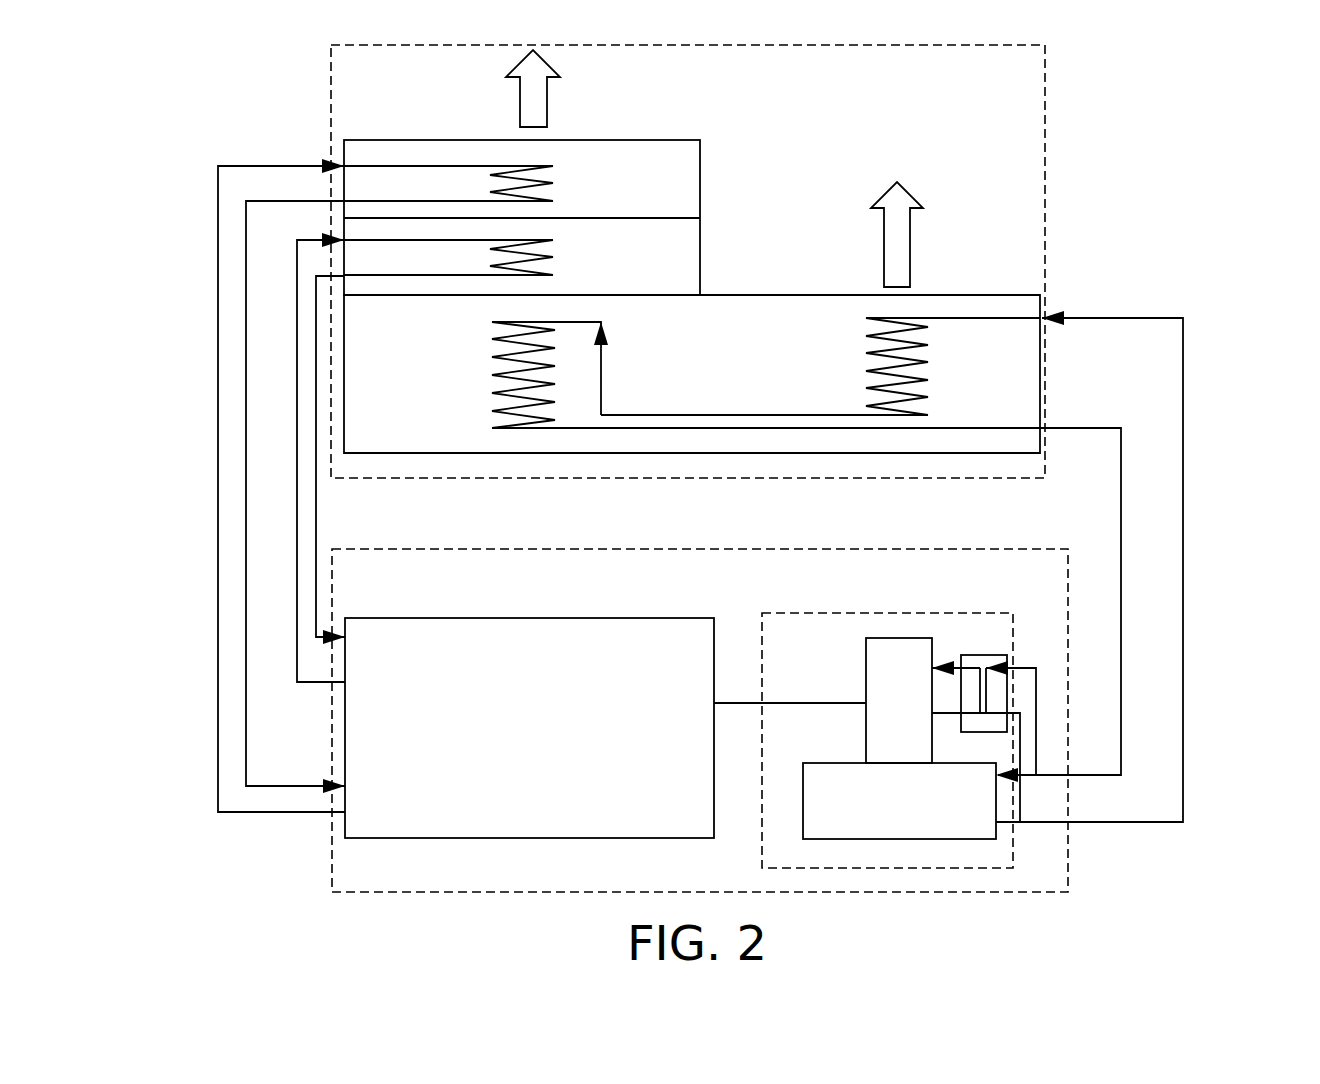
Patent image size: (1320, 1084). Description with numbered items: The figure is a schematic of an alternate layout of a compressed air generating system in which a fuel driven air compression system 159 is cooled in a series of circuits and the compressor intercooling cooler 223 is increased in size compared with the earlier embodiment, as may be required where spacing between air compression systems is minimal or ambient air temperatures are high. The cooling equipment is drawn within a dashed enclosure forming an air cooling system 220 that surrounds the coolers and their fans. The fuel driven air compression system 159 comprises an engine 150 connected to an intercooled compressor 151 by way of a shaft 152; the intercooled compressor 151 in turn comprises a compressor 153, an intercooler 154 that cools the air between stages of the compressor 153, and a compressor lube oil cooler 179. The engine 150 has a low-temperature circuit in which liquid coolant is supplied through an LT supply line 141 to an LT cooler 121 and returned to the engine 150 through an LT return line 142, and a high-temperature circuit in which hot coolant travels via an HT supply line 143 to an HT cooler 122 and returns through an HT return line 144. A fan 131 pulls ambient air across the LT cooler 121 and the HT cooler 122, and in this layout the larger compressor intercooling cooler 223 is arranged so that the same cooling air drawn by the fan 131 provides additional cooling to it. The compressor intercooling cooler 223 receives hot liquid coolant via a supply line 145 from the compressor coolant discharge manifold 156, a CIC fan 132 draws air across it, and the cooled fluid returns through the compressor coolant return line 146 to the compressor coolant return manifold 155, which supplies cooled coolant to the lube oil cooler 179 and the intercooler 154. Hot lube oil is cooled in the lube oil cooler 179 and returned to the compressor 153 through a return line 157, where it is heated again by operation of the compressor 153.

The LT cooler 121 is at (553, 257).
The HT cooler 122 is at (553, 184).
The fan 131 is at (547, 112).
The CIC fan 132 is at (884, 252).
The LT supply line 141 is at (297, 542).
The LT return line 142 is at (316, 418).
The HT supply line 143 is at (218, 553).
The HT return line 144 is at (246, 451).
The supply line 145 is at (1183, 622).
The compressor coolant return line 146 is at (1121, 522).
The engine 150 is at (510, 618).
The intercooled compressor 151 is at (777, 613).
The shaft 152 is at (793, 703).
The compressor 153 is at (887, 638).
The intercooler 154 is at (920, 840).
The compressor coolant return manifold 155 is at (1036, 705).
The compressor coolant discharge manifold 156 is at (1022, 765).
The return line 157 is at (957, 640).
The compressor lube oil cooler 179 is at (983, 640).
The fuel driven air compression system 159 is at (557, 549).
The heat pump unit 220 is at (1050, 131).
The compressor intercooling cooler 223 is at (866, 370).